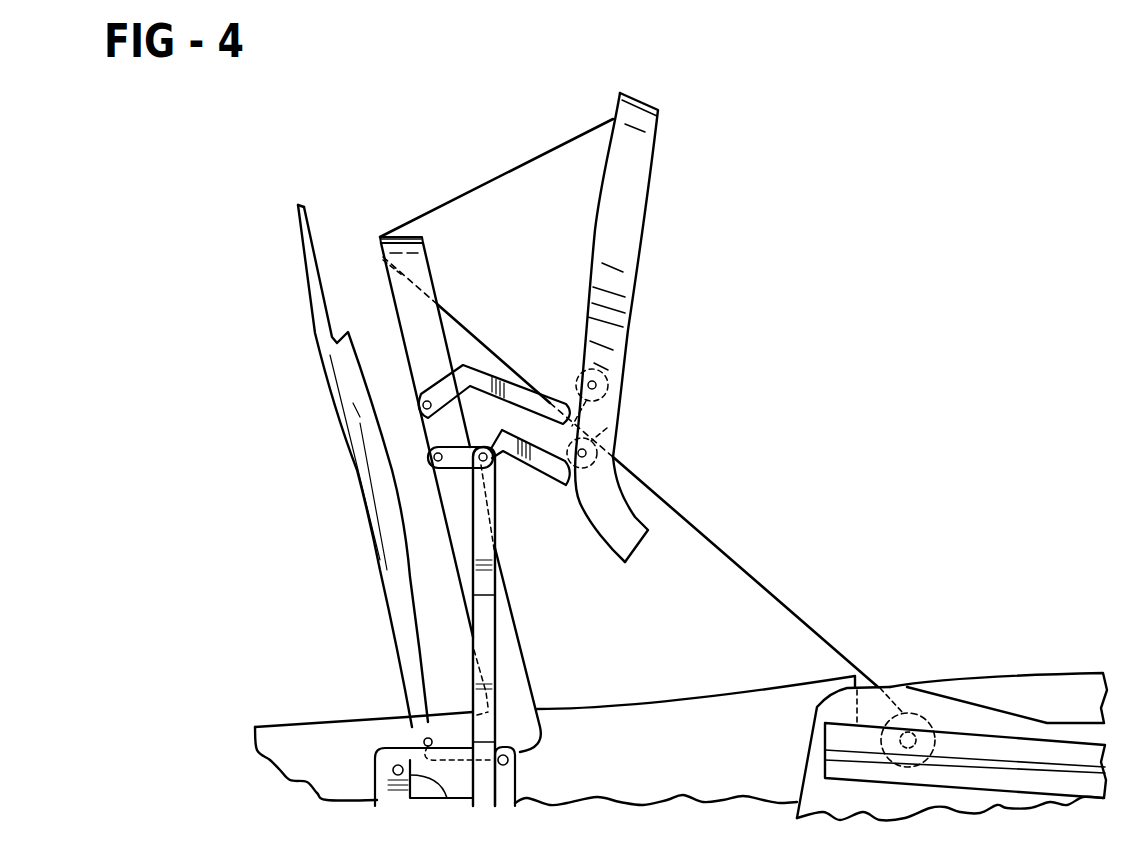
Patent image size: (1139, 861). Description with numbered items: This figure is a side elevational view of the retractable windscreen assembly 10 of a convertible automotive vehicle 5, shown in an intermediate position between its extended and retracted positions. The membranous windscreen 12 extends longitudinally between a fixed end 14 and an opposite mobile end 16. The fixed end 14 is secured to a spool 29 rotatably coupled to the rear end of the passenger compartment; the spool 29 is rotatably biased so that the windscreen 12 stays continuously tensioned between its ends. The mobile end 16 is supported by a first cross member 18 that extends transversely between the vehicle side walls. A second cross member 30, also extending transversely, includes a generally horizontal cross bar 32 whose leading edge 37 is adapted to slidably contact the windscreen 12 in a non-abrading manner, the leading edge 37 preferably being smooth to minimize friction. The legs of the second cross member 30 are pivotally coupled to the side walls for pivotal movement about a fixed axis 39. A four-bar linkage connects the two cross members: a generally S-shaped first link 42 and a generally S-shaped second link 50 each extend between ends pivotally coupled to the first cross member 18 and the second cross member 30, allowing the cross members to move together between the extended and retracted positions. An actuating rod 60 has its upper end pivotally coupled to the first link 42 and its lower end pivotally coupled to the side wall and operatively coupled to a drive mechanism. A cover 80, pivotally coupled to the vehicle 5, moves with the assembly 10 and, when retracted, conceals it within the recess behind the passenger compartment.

The convertible automotive vehicle 5 is at (257, 741).
The retractable windscreen assembly 10 is at (866, 357).
The membranous windscreen 12 is at (711, 536).
The fixed end 14 is at (908, 732).
The mobile end 16 is at (612, 118).
The first cross member 18 is at (641, 231).
The spool 29 is at (938, 724).
The second cross member 30 is at (411, 313).
The cross bar 32 is at (413, 236).
The leading edge 37 is at (380, 240).
The fixed axis 39 is at (424, 742).
The first link 42 is at (533, 436).
The second link 50 is at (489, 367).
The actuating rod 60 is at (493, 607).
The cover 80 is at (382, 588).